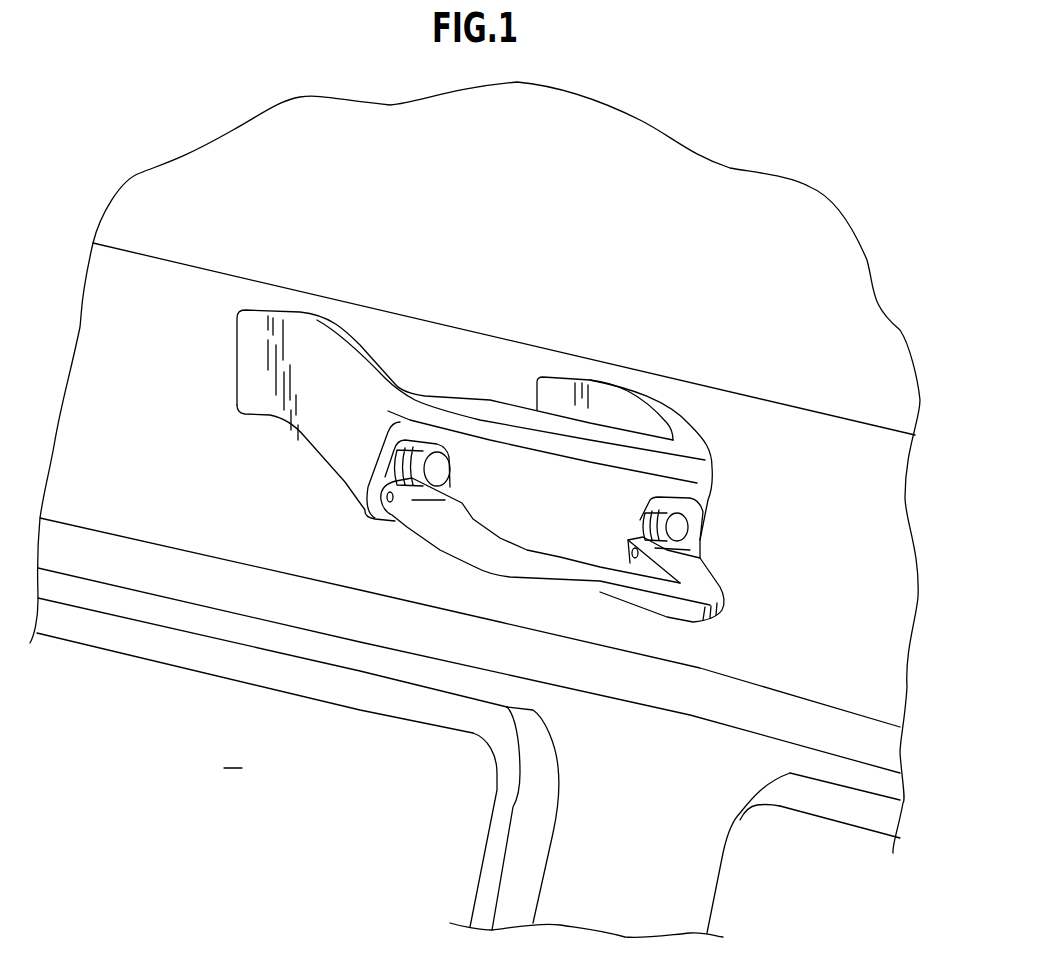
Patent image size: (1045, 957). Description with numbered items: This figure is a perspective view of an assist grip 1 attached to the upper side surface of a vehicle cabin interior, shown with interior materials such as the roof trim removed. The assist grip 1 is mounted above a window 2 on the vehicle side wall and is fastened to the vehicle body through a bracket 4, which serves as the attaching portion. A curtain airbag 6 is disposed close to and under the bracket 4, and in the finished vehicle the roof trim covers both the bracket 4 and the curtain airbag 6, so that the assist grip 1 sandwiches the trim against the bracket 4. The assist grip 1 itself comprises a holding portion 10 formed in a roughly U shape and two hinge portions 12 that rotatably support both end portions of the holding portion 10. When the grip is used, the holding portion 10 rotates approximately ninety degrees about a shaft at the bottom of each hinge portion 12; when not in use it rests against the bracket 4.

The assist grip 1 is at (532, 504).
The window 2 is at (475, 510).
The bracket 4 is at (385, 362).
The curtain airbag 6 is at (170, 570).
The holding portion 10 is at (610, 593).
The hinge portions 12 is at (462, 464).